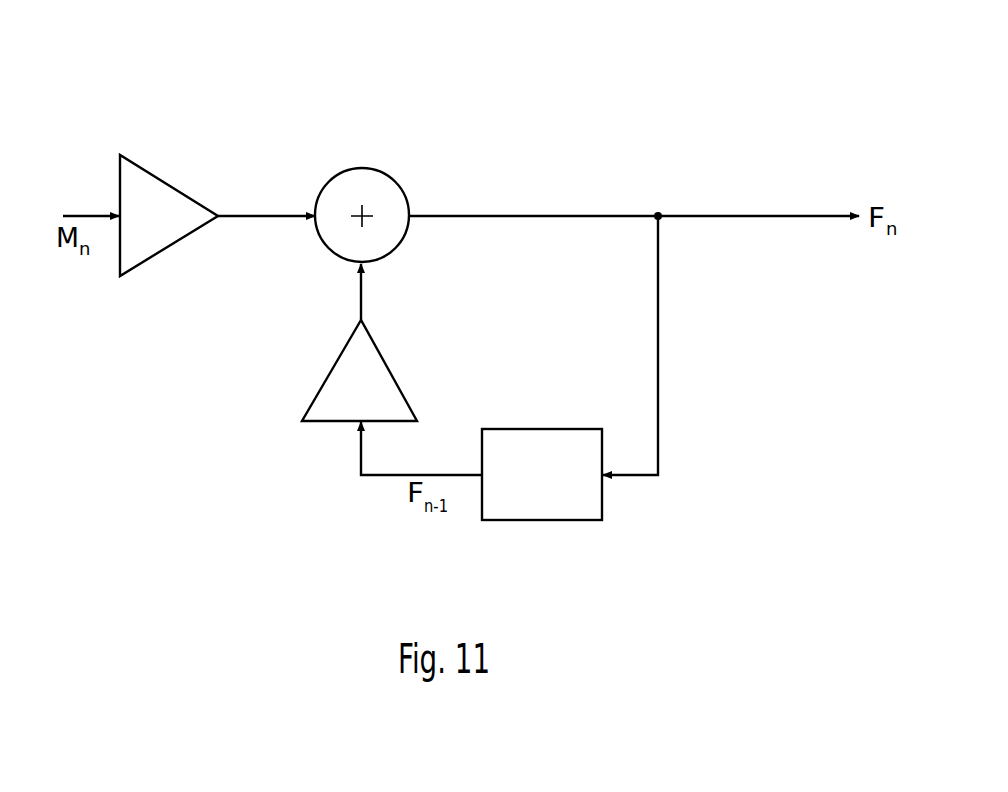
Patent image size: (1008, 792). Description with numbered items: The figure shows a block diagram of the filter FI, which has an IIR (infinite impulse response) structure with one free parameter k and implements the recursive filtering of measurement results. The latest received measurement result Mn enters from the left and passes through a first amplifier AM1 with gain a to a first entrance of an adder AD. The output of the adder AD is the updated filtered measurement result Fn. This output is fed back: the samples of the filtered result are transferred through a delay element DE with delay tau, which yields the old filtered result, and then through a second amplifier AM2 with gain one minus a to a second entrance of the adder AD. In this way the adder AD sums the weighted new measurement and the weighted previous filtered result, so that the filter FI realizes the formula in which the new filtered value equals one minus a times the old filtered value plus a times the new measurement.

The first amplifier AM1 is at (158, 193).
The adder AD is at (388, 192).
The second amplifier AM2 is at (380, 373).
The delay element DE is at (527, 440).
The filter FI is at (545, 110).